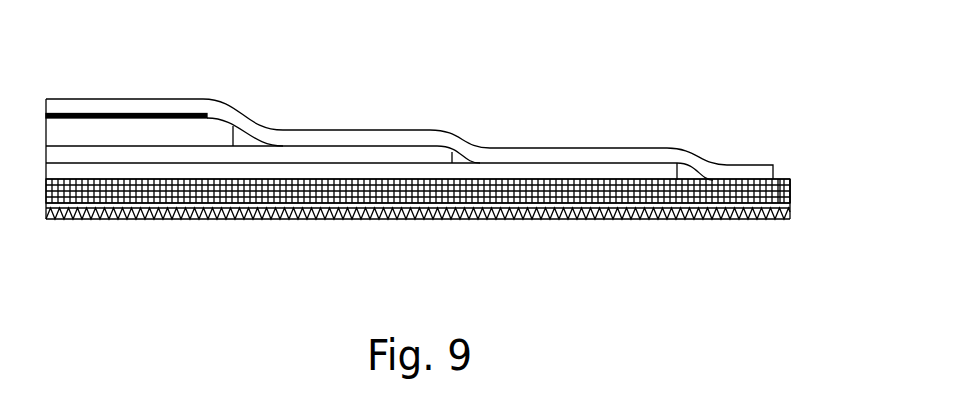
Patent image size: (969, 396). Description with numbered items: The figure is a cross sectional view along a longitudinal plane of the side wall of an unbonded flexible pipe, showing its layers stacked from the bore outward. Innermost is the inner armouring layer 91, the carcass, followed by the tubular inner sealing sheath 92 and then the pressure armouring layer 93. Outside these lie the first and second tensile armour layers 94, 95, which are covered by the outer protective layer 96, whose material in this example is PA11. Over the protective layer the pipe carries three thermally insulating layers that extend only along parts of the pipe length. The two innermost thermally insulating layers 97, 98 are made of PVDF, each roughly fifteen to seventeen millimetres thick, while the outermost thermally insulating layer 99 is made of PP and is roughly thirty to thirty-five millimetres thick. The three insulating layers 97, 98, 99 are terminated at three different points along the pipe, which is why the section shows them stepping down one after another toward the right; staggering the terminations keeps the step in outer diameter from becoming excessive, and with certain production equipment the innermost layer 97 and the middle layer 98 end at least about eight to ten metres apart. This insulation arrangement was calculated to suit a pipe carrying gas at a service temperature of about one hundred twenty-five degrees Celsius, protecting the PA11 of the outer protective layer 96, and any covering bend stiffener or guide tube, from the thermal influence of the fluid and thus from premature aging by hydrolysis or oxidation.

The inner armouring layer 91 is at (670, 212).
The tubular inner sealing sheath 92 is at (743, 207).
The pressure armouring layer 93 is at (790, 200).
The first tensile armour layer 94 is at (790, 186).
The second tensile armour layer 95 is at (778, 180).
The outer protective layer 96 is at (733, 172).
The innermost thermally insulating layer 97 is at (352, 148).
The middle thermally insulating layer 98 is at (203, 155).
The outermost thermally insulating layer 99 is at (133, 130).